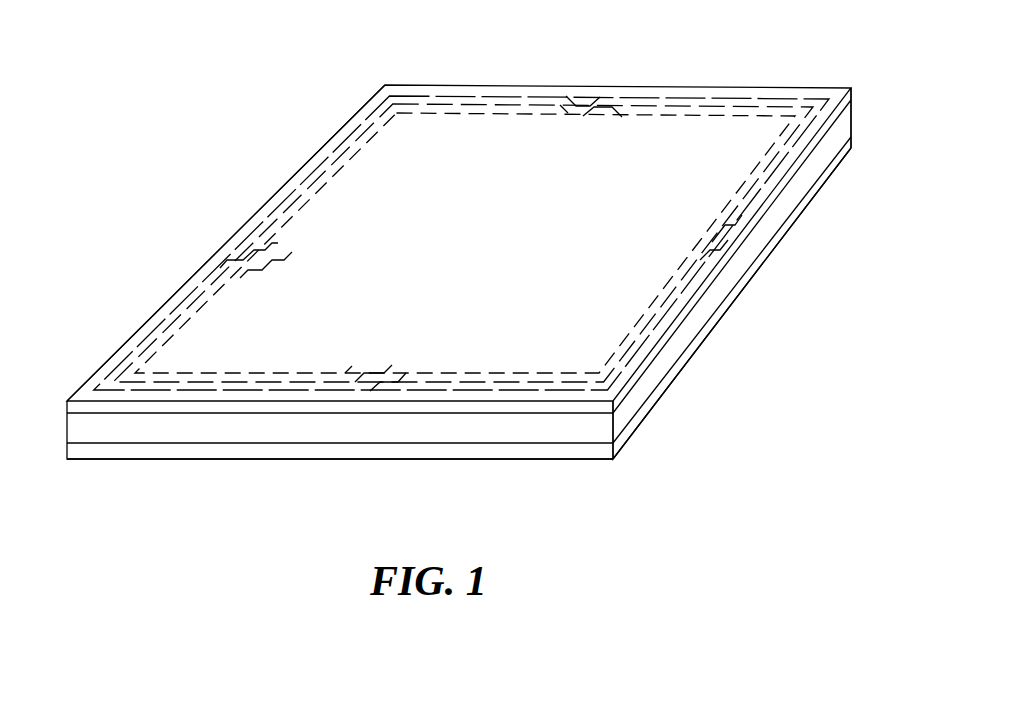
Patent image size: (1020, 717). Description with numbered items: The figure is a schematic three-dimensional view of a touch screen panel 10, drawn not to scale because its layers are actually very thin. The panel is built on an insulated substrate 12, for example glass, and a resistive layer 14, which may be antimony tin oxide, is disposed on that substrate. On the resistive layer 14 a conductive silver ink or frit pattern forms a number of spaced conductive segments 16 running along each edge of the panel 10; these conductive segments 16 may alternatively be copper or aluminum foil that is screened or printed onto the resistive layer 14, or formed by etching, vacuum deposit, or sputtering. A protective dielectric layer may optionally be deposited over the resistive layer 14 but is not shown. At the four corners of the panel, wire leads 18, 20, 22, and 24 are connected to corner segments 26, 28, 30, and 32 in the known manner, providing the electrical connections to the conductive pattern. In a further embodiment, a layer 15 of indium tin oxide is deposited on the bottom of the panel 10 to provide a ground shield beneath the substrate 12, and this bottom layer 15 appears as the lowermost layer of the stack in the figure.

The touch screen panel 10 is at (239, 144).
The insulated substrate 12 is at (147, 427).
The resistive layer 14 is at (97, 402).
The layer of indium tin oxide 15 is at (205, 443).
The conductive segments 16 is at (490, 390).
The wire lead 18 is at (67, 313).
The wire lead 20 is at (390, 96).
The wire lead 22 is at (882, 53).
The wire lead 24 is at (717, 435).
The corner segment 26 is at (97, 392).
The corner segment 28 is at (415, 97).
The corner segment 30 is at (807, 98).
The corner segment 32 is at (747, 422).